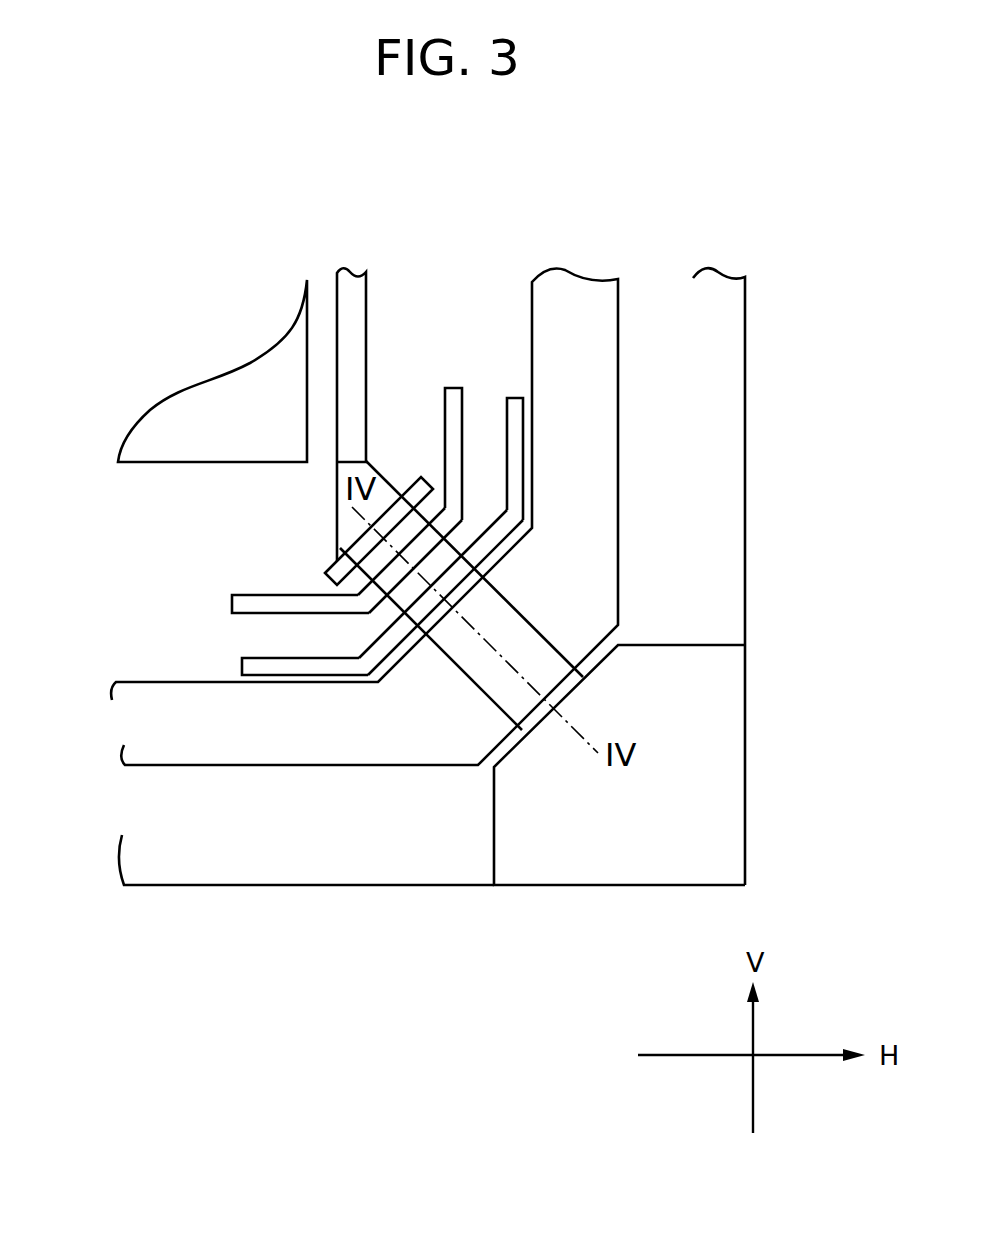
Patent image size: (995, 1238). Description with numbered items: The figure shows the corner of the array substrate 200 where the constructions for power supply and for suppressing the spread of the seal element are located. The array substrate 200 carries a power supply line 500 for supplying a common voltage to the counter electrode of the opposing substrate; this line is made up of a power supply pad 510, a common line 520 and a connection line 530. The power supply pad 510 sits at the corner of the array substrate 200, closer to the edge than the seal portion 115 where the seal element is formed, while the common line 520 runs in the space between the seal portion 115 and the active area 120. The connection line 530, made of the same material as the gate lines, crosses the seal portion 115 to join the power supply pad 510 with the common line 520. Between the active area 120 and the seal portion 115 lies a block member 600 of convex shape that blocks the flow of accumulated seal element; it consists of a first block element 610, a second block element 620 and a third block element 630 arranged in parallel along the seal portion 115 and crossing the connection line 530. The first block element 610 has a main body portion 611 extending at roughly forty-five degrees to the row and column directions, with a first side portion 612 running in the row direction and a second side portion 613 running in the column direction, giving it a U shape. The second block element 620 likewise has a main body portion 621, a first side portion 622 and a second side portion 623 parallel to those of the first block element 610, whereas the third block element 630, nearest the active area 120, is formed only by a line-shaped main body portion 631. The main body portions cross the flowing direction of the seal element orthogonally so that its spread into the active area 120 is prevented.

The seal portion 115 is at (581, 271).
The active area 120 is at (210, 386).
The array substrate 200 is at (742, 383).
The power supply line 500 is at (472, 713).
The power supply pad 510 is at (728, 705).
The common line 520 is at (356, 262).
The connection line 530 is at (518, 630).
The block member 600 is at (88, 540).
The first block element 610 is at (398, 569).
The main body portion 611 is at (503, 538).
The first side portion 612 is at (299, 668).
The second side portion 613 is at (512, 446).
The second block element 620 is at (295, 499).
The main body portion 621 is at (445, 390).
The first side portion 622 is at (352, 607).
The second side portion 623 is at (455, 387).
The third block element 630 is at (263, 488).
The main body portion 631 is at (437, 508).